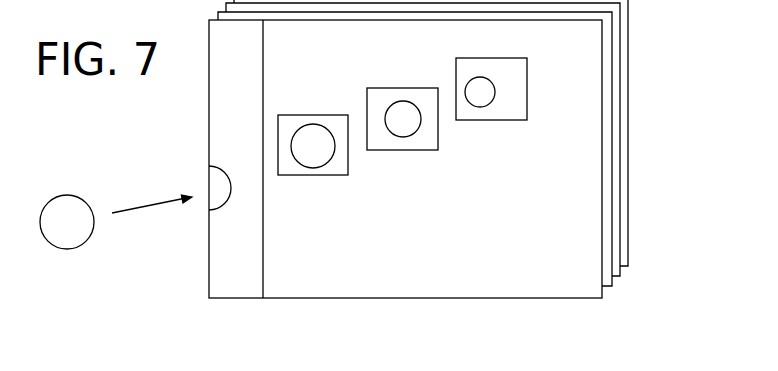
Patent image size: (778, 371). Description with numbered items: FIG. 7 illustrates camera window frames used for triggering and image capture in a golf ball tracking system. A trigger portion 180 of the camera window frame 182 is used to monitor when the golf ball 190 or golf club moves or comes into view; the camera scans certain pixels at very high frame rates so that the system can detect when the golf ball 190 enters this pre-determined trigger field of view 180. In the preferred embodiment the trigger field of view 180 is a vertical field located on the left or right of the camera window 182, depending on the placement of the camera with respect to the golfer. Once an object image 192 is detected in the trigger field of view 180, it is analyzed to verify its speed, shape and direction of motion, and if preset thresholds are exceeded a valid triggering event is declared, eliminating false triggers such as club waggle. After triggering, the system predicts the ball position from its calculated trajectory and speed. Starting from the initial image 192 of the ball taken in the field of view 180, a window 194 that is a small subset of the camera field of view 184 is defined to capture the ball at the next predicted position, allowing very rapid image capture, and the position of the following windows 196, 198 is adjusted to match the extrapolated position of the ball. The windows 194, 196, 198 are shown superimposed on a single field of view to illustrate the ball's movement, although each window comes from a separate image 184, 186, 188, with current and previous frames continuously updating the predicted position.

The trigger portion 180 is at (237, 302).
The camera window frame 182 is at (558, 300).
The camera field of view 184 is at (612, 252).
The image 186 is at (620, 193).
The image 188 is at (628, 128).
The golf ball 190 is at (73, 195).
The object image 192 is at (227, 207).
The window 194 is at (348, 168).
The window 196 is at (438, 142).
The window 198 is at (527, 108).